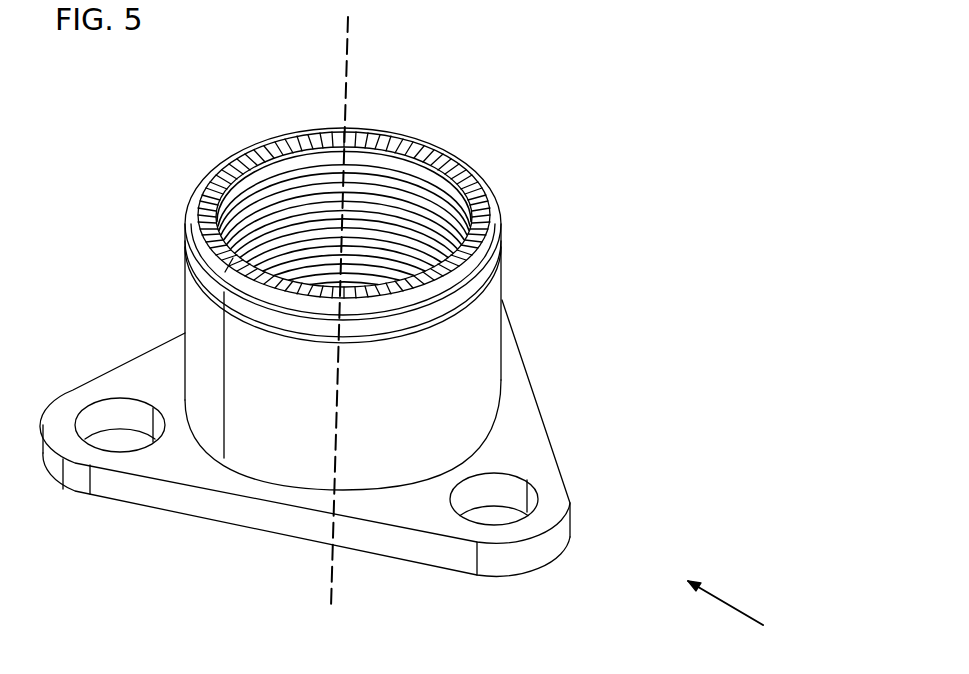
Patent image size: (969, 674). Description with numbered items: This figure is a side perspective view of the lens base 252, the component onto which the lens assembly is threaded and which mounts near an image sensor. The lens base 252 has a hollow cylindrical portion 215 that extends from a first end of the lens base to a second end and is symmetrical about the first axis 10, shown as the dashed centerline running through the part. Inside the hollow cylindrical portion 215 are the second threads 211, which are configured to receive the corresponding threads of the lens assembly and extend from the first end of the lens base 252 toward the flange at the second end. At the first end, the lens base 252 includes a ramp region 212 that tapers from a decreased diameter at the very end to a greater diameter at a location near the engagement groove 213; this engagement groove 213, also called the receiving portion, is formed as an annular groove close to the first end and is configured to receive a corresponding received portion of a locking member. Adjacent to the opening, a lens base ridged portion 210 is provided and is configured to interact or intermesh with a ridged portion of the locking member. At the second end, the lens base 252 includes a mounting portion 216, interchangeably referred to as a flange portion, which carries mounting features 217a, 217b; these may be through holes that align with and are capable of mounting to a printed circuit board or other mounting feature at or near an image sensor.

The first axis 10 is at (348, 50).
The second threads 211 is at (300, 180).
The lens base ridged portion 210 is at (470, 176).
The ramp region 212 is at (489, 241).
The engagement groove 213 is at (480, 290).
The hollow cylindrical portion 215 is at (490, 332).
The mounting portion 216 is at (537, 458).
The mounting feature 217a is at (92, 424).
The mounting feature 217b is at (520, 516).
The lens base 252 is at (753, 615).